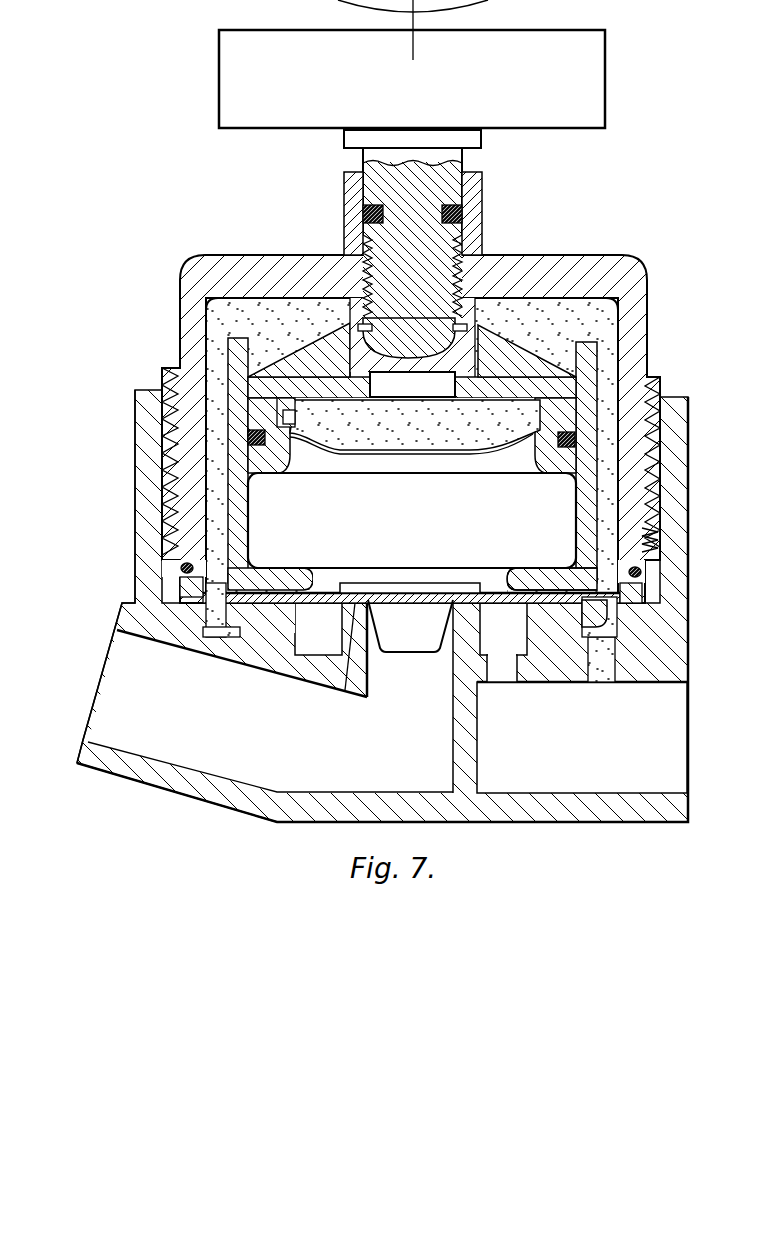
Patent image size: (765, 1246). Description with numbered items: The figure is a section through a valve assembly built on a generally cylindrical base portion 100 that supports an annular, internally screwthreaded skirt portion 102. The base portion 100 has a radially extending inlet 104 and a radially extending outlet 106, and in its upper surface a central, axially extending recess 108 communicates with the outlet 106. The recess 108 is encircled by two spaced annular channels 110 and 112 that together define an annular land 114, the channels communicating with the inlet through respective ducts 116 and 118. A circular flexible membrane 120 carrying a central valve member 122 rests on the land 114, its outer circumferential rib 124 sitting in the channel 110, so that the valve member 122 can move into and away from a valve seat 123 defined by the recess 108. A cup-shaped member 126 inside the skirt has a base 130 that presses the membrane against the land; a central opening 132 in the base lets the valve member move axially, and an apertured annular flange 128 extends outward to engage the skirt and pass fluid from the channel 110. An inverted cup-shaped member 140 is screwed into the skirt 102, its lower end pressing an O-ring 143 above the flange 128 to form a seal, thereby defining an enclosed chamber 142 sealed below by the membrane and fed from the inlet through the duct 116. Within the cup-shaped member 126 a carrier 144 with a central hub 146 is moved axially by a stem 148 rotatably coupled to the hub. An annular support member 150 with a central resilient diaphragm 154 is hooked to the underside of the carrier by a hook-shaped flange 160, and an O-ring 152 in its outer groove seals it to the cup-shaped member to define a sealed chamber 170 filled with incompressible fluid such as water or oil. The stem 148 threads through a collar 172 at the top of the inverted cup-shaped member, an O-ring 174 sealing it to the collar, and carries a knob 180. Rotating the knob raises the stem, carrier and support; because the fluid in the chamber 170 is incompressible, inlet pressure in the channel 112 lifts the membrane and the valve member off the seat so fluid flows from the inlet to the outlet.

The base portion 100 is at (607, 822).
The skirt portion 102 is at (670, 452).
The inlet 104 is at (597, 764).
The outlet 106 is at (222, 731).
The central recess 108 is at (427, 689).
The annular channel 110 is at (215, 636).
The annular channel 112 is at (312, 627).
The annular land 114 is at (267, 612).
The duct 116 is at (603, 672).
The duct 118 is at (512, 673).
The flexible membrane 120 is at (282, 592).
The valve member 122 is at (433, 628).
The valve seat 123 is at (357, 628).
The circumferential rib 124 is at (598, 620).
The cup-shaped member 126 is at (598, 356).
The annular flange 128 is at (640, 589).
The base 130 is at (530, 580).
The central opening 132 is at (328, 580).
The inverted cup-shaped member 140 is at (622, 282).
The enclosed chamber 142 is at (268, 318).
The O-ring 143 is at (178, 574).
The carrier 144 is at (521, 378).
The central hub 146 is at (353, 356).
The stem 148 is at (458, 170).
The annular support member 150 is at (291, 464).
The O-ring 152 is at (558, 448).
The resilient diaphragm 154 is at (420, 446).
The hook-shaped flange 160 is at (292, 418).
The sealed chamber 170 is at (425, 541).
The collar 172 is at (468, 217).
The O-ring 174 is at (363, 216).
The knob 180 is at (598, 82).